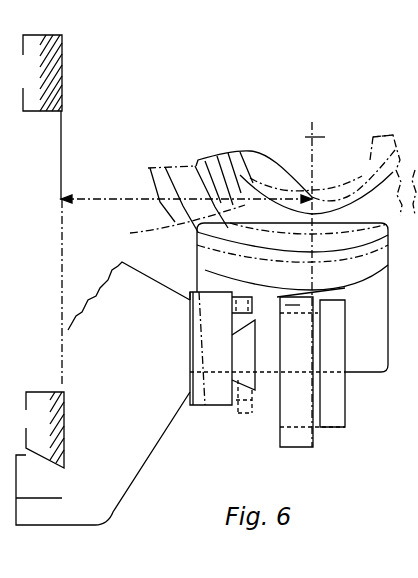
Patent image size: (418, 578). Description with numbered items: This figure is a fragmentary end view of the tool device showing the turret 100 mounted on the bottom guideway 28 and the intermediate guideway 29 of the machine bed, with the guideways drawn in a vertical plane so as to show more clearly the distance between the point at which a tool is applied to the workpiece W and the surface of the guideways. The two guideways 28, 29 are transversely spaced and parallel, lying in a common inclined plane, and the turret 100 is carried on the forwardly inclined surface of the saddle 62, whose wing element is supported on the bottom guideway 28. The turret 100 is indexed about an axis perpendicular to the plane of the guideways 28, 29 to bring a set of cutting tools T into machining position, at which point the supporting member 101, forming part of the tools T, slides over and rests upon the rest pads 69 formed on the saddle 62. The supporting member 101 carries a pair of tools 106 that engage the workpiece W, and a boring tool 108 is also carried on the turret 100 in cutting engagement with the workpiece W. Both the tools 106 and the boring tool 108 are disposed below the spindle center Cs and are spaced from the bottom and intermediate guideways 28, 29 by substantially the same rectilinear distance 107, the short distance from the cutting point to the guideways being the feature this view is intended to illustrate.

The intermediate guideway 29 is at (52, 50).
The bottom guideway 28 is at (50, 376).
The saddle 62 is at (136, 472).
The rectilinear distance 107 is at (116, 191).
The workpiece W is at (242, 232).
The turret 100 is at (386, 369).
The spindle center Cs is at (312, 137).
The supporting member 101 is at (218, 400).
The cutting tools T is at (313, 438).
The tools 106 is at (300, 306).
The rest pads 69 is at (196, 300).
The boring tool 108 is at (395, 132).